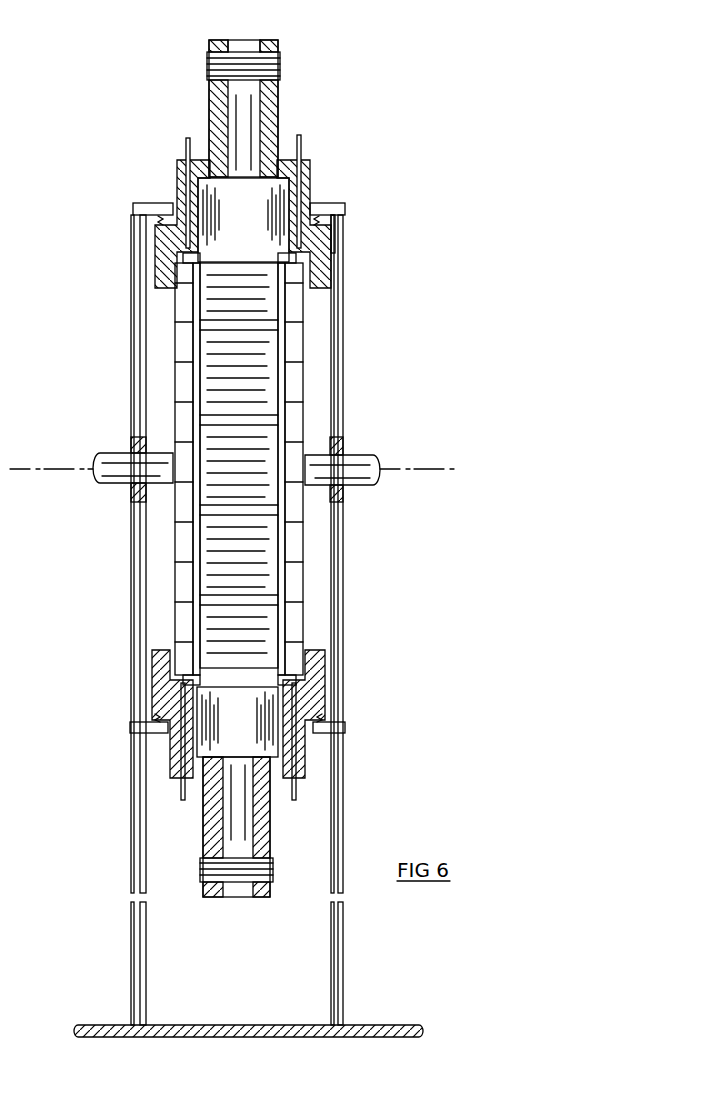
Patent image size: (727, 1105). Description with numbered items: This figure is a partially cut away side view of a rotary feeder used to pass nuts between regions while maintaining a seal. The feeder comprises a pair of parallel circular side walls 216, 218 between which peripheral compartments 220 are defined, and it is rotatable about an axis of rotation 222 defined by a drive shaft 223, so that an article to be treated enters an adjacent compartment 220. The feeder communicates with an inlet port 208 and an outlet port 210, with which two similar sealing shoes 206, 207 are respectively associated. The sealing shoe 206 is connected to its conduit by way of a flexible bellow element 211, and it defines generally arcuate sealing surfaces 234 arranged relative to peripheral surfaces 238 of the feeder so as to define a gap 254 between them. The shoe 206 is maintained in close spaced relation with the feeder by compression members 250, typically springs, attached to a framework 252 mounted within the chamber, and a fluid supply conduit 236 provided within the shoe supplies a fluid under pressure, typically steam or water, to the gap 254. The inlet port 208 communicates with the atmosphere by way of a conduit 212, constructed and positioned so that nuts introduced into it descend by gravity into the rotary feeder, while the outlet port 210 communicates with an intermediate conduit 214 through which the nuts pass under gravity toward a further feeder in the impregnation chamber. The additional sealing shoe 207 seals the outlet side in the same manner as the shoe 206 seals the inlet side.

The sealing shoe 206 is at (355, 160).
The additional sealing shoe 207 is at (300, 841).
The inlet port 208 is at (247, 197).
The outlet port 210 is at (210, 737).
The flexible bellow element 211 is at (281, 68).
The conduit 212 is at (277, 40).
The intermediate conduit 214 is at (207, 897).
The circular side wall 216 is at (177, 602).
The circular side wall 218 is at (298, 580).
The peripheral compartments 220 is at (213, 450).
The axis of rotation 222 is at (58, 472).
The drive shaft 223 is at (370, 455).
The arcuate sealing surfaces 234 is at (333, 240).
The fluid supply conduit 236 is at (187, 140).
The peripheral surfaces 238 is at (307, 258).
The compression members 250 is at (165, 220).
The framework 252 is at (340, 650).
The gap 254 is at (173, 257).